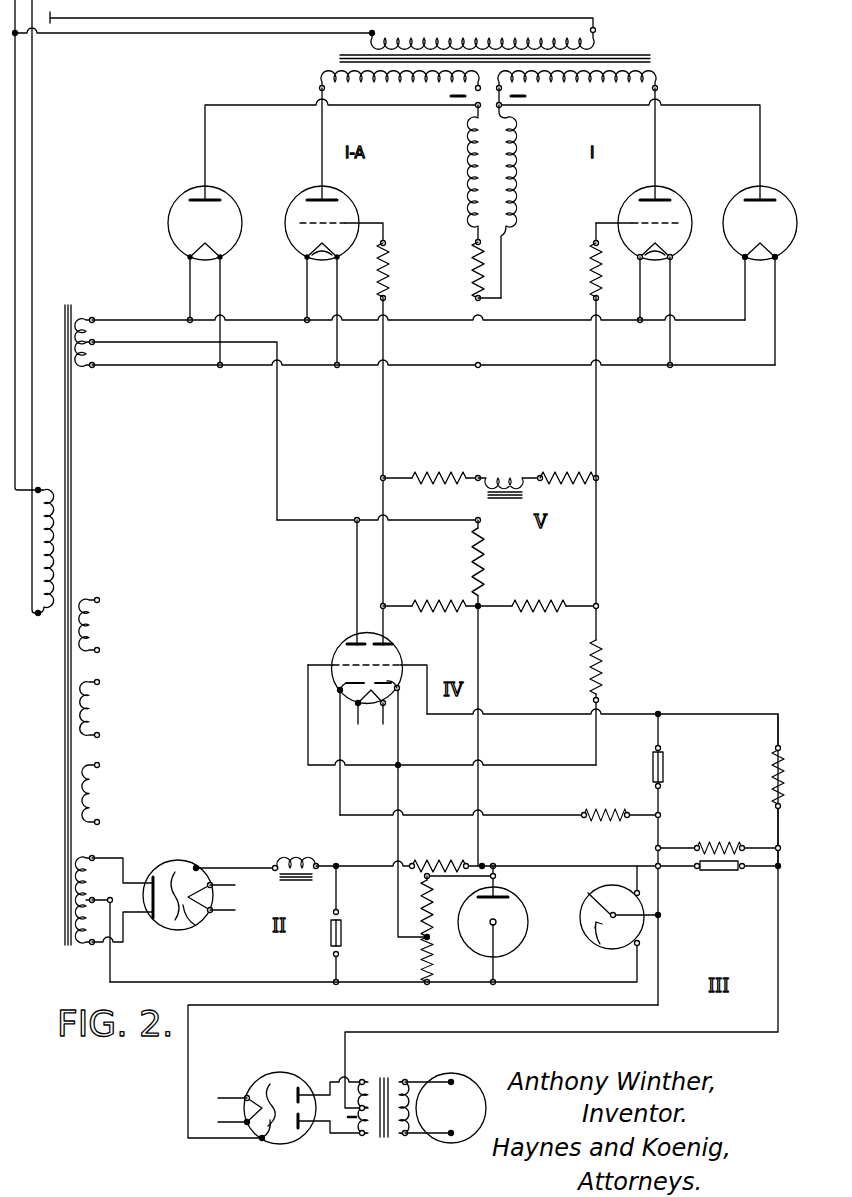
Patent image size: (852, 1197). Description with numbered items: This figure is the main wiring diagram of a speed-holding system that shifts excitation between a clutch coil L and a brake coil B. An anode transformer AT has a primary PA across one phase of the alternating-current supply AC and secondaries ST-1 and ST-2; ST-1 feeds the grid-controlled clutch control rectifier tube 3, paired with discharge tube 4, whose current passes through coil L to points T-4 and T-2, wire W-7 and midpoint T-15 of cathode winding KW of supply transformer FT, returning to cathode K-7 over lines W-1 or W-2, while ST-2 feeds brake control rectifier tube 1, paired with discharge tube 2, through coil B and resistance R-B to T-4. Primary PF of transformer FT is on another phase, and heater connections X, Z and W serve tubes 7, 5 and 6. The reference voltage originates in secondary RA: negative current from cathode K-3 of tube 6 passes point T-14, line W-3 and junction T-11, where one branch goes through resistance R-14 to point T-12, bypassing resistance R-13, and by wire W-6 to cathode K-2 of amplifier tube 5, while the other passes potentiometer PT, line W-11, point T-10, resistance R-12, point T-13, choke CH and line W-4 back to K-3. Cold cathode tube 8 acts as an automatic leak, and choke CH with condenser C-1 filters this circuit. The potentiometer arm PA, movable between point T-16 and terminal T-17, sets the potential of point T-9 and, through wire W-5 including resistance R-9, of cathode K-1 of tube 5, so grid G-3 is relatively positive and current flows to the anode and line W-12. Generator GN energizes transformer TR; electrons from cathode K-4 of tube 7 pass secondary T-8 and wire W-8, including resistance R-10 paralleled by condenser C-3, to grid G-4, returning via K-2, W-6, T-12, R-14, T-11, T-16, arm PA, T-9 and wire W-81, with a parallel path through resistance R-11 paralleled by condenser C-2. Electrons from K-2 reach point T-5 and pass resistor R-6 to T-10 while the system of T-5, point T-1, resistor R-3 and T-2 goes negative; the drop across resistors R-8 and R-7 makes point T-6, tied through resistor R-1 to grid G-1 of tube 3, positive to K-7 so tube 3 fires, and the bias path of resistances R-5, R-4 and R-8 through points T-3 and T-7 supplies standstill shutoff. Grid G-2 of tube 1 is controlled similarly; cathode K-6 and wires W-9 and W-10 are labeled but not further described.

The brake control rectifier tube 1 is at (337, 197).
The discharge tube 2 is at (215, 195).
The clutch control rectifier tube 3 is at (628, 195).
The discharge tube 4 is at (732, 195).
The amplifier tube 5 is at (336, 652).
The tube 6 is at (162, 870).
The tube 7 is at (300, 1144).
The cold cathode tube 8 is at (524, 894).
The A. C. supply circuit AC is at (303, 306).
The anode transformer AT is at (604, 48).
The primary PA is at (493, 35).
The secondary component ST-1 is at (658, 82).
The secondary component ST-2 is at (320, 86).
The brake excitation coil B is at (466, 142).
The clutch excitation coil L is at (516, 142).
The resistance R-B is at (478, 288).
The resistor R-1 is at (604, 290).
The resistor R-3 is at (442, 463).
The resistance R-4 is at (563, 463).
The resistance R-5 is at (488, 549).
The resistor R-6 is at (444, 610).
The resistance R-7 is at (544, 610).
The resistance R-8 is at (600, 656).
The resistance R-9 is at (604, 820).
The resistance R-10 is at (761, 790).
The resistance R-11 is at (688, 848).
The resistance R-12 is at (469, 854).
The resistance R-13 is at (444, 906).
The resistance R-14 is at (434, 980).
The condenser C-1 is at (340, 910).
The condenser C-2 is at (708, 872).
The condenser C-3 is at (664, 756).
The choke CH is at (517, 474).
The grid G-1 is at (626, 218).
The grid G-2 is at (338, 216).
The grid G-3 is at (308, 666).
The grid G-4 is at (396, 666).
The cathode K-1 is at (329, 749).
The cathode K-2 is at (404, 723).
The cathode K-3 is at (205, 923).
The cathode K-4 is at (268, 1143).
The cathode K-6 is at (335, 256).
The cathode K-7 is at (675, 254).
The cathode secondary component KW is at (93, 333).
The general supply transformer FT is at (80, 501).
The primary PF is at (41, 616).
The secondary component RA is at (72, 963).
The heater connections X is at (95, 626).
The heater connections Z is at (96, 710).
The heater connections W is at (100, 795).
The potentiometer PT is at (576, 892).
The transformer TR is at (378, 1138).
The generator GN is at (445, 1108).
The point T-1 is at (380, 478).
The point T-2 is at (476, 520).
The point T-3 is at (602, 480).
The point T-4 is at (476, 292).
The point T-5 is at (390, 608).
The point T-6 is at (610, 606).
The point T-7 is at (592, 700).
The secondary T-8 is at (376, 1080).
The point T-9 is at (662, 916).
The point T-10 is at (482, 608).
The junction point T-11 is at (422, 982).
The point T-12 is at (442, 931).
The point T-13 is at (336, 866).
The point T-14 is at (117, 938).
The midpoint T-15 is at (107, 344).
The point T-16 is at (638, 956).
The terminal T-17 is at (632, 888).
The line W-1 is at (119, 318).
The line W-2 is at (113, 366).
The line W-3 is at (226, 982).
The line W-4 is at (258, 870).
The wire W-5 is at (336, 754).
The wire W-6 is at (398, 760).
The wire W-7 is at (276, 468).
The wire W-8 is at (678, 714).
The wire W-9 is at (603, 570).
The wire W-10 is at (377, 468).
The line W-11 is at (479, 702).
The line W-12 is at (356, 604).
The wire W-81 is at (232, 1008).